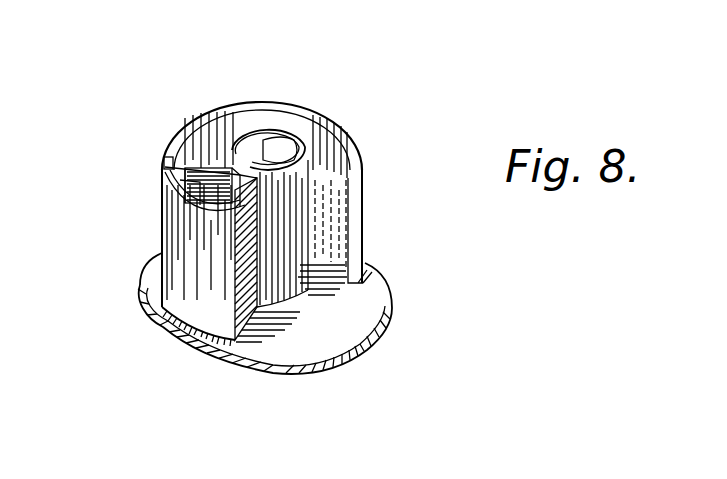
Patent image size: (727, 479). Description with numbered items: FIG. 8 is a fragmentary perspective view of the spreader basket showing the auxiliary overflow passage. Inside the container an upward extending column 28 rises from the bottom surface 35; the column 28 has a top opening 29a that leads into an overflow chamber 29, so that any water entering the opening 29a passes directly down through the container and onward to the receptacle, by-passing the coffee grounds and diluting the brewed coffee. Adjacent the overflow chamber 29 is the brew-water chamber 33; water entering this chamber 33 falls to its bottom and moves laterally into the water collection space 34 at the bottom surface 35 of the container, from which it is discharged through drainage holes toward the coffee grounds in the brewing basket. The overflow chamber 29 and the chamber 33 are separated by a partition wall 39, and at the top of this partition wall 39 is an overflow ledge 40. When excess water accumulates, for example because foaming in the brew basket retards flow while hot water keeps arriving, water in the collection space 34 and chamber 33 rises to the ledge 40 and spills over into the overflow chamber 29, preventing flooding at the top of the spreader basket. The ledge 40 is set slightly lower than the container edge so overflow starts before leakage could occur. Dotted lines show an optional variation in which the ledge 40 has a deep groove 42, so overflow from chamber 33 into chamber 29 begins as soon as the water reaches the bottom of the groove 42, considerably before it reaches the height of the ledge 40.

The column 28 is at (157, 282).
The overflow chamber 29 is at (147, 221).
The top opening 29a is at (213, 202).
The chamber 33 is at (250, 134).
The water collection space 34 is at (328, 223).
The bottom surface 35 is at (357, 333).
The partition wall 39 is at (175, 185).
The overflow ledge 40 is at (187, 160).
The groove 42 is at (215, 112).